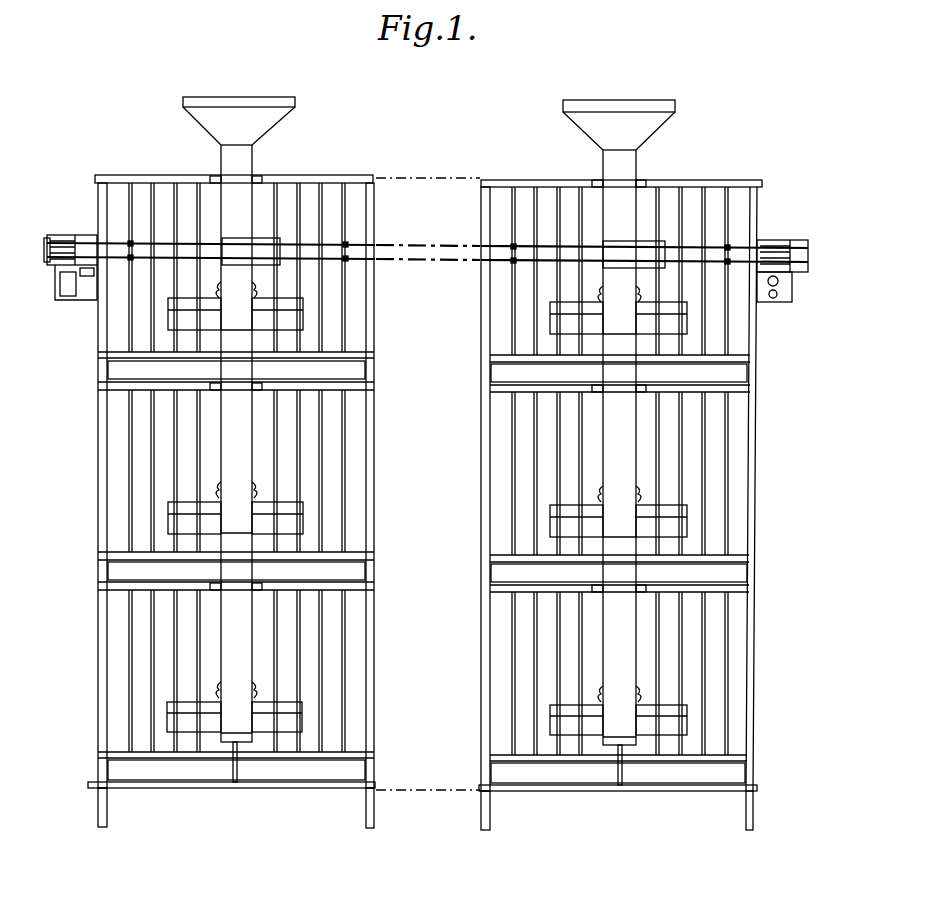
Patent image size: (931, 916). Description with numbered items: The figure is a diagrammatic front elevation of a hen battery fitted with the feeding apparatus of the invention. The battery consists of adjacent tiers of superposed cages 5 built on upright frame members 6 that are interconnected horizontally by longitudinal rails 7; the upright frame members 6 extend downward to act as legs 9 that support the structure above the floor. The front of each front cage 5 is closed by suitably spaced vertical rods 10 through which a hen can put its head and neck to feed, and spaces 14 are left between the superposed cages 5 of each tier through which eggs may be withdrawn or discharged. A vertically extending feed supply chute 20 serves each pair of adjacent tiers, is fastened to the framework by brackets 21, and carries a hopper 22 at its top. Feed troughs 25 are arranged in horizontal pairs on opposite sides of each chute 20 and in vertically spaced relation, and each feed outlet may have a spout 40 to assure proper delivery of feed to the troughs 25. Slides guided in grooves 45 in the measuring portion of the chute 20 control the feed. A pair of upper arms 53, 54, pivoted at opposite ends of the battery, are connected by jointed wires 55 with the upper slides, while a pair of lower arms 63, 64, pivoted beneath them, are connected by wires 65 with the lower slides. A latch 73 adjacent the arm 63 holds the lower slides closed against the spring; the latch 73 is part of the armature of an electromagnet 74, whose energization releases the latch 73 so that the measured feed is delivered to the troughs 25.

The cage 5 is at (110, 338).
The upright frame member 6 is at (100, 630).
The longitudinal rail 7 is at (148, 177).
The leg 9 is at (100, 815).
The vertical rod 10 is at (337, 190).
The space 14 is at (118, 376).
The feed supply chute 20 is at (250, 410).
The bracket 21 is at (214, 179).
The hopper 22 is at (222, 104).
The feed trough 25 is at (186, 326).
The spout 40 is at (234, 290).
The groove 45 is at (248, 236).
The upper arm 53 is at (82, 234).
The upper arm 54 is at (773, 240).
The jointed wire 55 is at (410, 244).
The arm 63 is at (56, 234).
The arm 64 is at (790, 245).
The wire 65 is at (427, 262).
The latch 73 is at (62, 282).
The electromagnet 74 is at (78, 300).